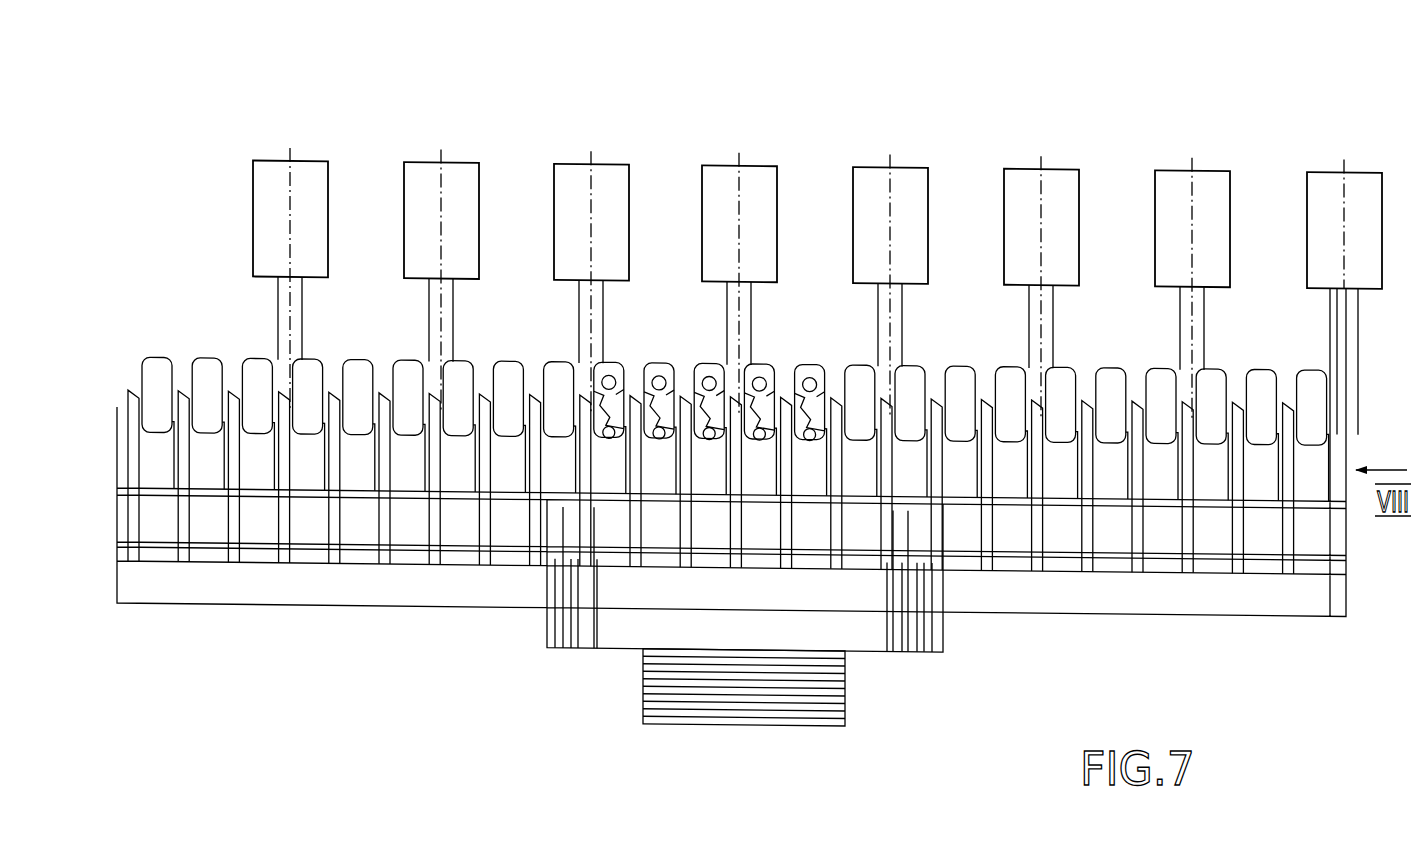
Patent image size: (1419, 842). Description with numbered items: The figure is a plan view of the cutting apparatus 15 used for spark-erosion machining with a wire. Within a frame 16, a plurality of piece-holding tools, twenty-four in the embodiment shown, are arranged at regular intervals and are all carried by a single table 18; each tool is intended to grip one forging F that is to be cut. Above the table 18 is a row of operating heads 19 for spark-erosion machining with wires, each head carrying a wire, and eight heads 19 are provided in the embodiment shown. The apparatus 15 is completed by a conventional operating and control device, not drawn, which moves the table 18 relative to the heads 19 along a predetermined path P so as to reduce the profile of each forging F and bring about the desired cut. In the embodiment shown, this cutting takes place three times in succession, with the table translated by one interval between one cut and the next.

The cutting apparatus 15 is at (313, 623).
The frame 16 is at (632, 621).
The table 18 is at (1120, 578).
The operating heads 19 is at (276, 160).
The forging F is at (205, 356).
The predetermined path P is at (830, 377).